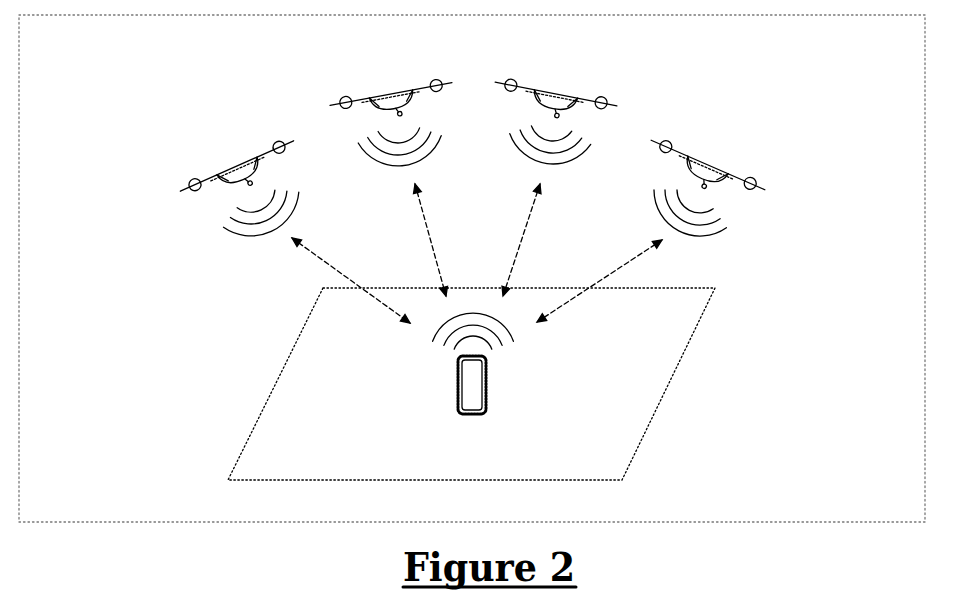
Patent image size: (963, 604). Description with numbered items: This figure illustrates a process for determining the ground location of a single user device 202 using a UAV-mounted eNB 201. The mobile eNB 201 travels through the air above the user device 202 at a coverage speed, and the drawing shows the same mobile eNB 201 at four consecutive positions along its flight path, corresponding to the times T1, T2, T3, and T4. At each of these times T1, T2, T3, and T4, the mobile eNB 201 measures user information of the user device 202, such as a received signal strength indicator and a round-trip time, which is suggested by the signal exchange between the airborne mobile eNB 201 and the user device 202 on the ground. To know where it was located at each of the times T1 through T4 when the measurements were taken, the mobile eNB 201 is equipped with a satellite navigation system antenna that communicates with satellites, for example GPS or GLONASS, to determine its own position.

The UAV-mounted eNB 201 is at (472, 131).
The user device 202 is at (468, 403).
The first time T1 is at (704, 185).
The second time T2 is at (554, 120).
The third time T3 is at (392, 121).
The fourth time T4 is at (242, 185).